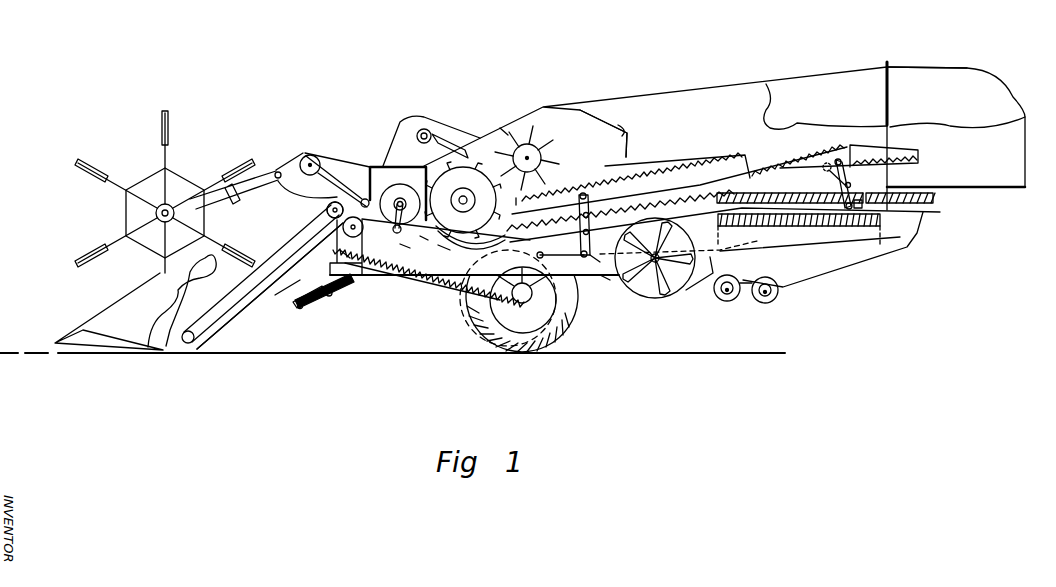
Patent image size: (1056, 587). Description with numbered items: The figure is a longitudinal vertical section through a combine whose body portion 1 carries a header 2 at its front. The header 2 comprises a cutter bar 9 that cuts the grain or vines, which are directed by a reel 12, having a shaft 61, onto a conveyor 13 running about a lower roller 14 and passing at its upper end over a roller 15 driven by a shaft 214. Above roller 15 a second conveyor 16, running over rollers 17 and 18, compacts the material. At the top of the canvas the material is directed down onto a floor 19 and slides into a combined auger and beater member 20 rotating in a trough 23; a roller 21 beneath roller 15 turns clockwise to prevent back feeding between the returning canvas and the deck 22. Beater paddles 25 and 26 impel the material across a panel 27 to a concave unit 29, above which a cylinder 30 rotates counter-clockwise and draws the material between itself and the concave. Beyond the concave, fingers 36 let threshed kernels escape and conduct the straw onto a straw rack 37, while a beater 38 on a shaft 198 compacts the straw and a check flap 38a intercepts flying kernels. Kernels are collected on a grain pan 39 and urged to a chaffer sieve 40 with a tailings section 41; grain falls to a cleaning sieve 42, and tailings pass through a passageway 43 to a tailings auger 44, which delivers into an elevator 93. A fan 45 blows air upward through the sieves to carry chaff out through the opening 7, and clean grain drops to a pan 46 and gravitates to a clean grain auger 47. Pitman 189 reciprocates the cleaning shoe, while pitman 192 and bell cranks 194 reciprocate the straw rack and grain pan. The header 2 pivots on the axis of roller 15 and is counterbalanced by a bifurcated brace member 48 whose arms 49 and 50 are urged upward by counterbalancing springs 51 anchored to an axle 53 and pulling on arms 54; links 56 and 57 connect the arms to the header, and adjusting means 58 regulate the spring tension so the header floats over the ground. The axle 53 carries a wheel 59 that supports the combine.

The body portion 1 is at (546, 85).
The header 2 is at (262, 289).
The discharge opening 7 is at (990, 201).
The cutter bar 9 is at (160, 353).
The reel 12 is at (176, 192).
The conveyor 13 is at (240, 283).
The lower roller 14 is at (185, 338).
The roller 15 is at (325, 207).
The second conveyor 16 is at (325, 189).
The roller 17 is at (298, 160).
The roller 18 is at (360, 190).
The floor 19 is at (396, 228).
The combined auger and beater member 20 is at (401, 253).
The roller 21 is at (350, 232).
The deck 22 is at (330, 260).
The trough 23 is at (421, 245).
The beater paddle 25 is at (392, 190).
The beater paddle 26 is at (367, 206).
The panel 27 is at (446, 250).
The concave unit 29 is at (486, 268).
The cylinder 30 is at (470, 160).
The fingers 36 is at (522, 222).
The straw rack 37 is at (680, 164).
The beater 38 is at (548, 150).
The check flap 38a is at (640, 121).
The grain pan 39 is at (582, 240).
The chaffer sieve 40 is at (786, 200).
The tailings section 41 is at (910, 175).
The cleaning sieve 42 is at (800, 228).
The passageway 43 is at (814, 274).
The tailings auger 44 is at (772, 305).
The fan 45 is at (630, 296).
The pan 46 is at (782, 272).
The clean grain auger 47 is at (718, 298).
The bifurcated brace member 48 is at (340, 293).
The arm 49 is at (302, 310).
The arm 50 is at (330, 297).
The counterbalancing spring 51 is at (428, 278).
The axle 53 is at (535, 300).
The arm 54 is at (331, 252).
The link 56 is at (305, 282).
The link 57 is at (280, 300).
The adjusting means 58 is at (518, 303).
The wheel 59 is at (456, 318).
The shaft 61 is at (157, 203).
The elevator 93 is at (442, 126).
The pitman 189 is at (726, 254).
The pitman 192 is at (598, 262).
The bell crank 194 is at (616, 278).
The shaft 198 is at (512, 132).
The shaft 214 is at (305, 232).